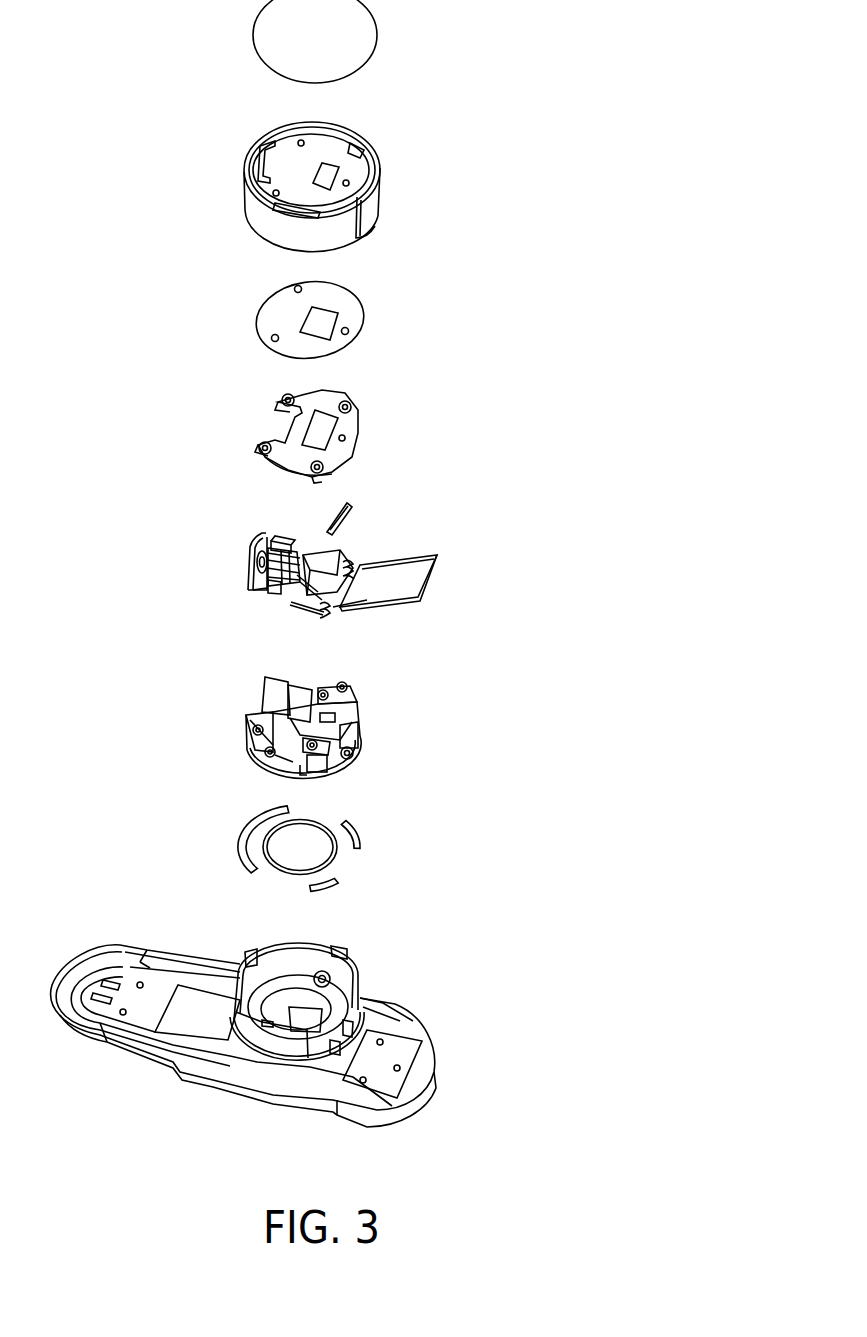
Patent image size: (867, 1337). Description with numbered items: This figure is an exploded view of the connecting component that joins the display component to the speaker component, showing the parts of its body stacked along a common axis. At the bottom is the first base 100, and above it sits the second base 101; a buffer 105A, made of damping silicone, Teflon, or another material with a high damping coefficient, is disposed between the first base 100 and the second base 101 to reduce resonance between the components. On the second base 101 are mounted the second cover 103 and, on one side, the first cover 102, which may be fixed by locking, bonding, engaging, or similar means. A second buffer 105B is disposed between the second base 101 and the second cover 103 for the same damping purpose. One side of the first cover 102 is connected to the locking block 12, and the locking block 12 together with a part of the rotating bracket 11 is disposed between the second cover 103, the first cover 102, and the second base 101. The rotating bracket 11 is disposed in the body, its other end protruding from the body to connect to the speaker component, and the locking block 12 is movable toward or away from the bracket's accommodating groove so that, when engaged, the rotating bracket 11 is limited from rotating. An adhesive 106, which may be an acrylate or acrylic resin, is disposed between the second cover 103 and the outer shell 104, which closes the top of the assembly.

The first base 100 is at (353, 963).
The second base 101 is at (355, 712).
The first cover 102 is at (250, 565).
The second cover 103 is at (350, 433).
The outer shell 104 is at (348, 147).
The buffer 105A is at (388, 827).
The buffer 105B is at (348, 503).
The adhesive 106 is at (348, 303).
The rotating bracket 11 is at (397, 568).
The locking block 12 is at (287, 545).